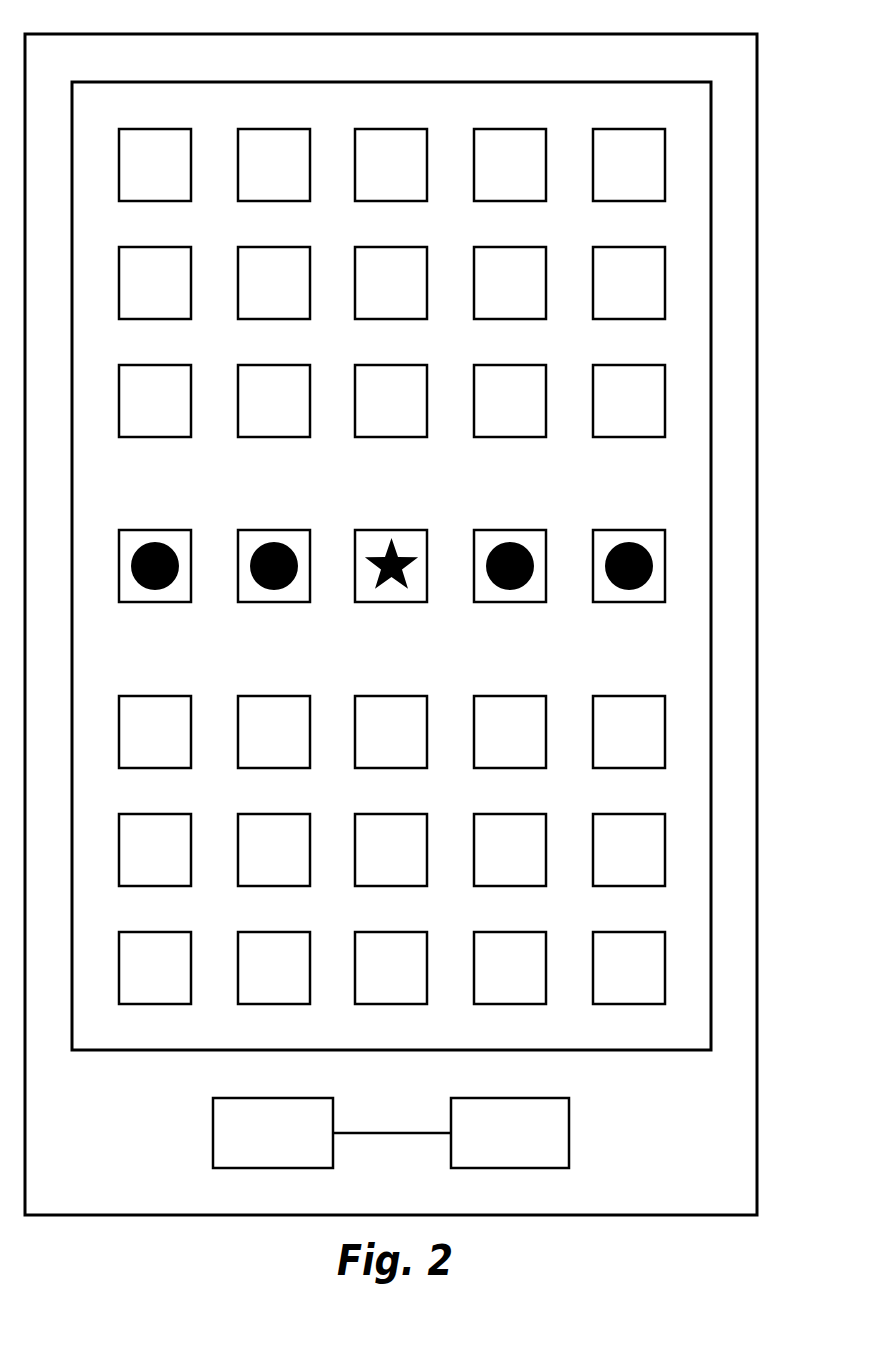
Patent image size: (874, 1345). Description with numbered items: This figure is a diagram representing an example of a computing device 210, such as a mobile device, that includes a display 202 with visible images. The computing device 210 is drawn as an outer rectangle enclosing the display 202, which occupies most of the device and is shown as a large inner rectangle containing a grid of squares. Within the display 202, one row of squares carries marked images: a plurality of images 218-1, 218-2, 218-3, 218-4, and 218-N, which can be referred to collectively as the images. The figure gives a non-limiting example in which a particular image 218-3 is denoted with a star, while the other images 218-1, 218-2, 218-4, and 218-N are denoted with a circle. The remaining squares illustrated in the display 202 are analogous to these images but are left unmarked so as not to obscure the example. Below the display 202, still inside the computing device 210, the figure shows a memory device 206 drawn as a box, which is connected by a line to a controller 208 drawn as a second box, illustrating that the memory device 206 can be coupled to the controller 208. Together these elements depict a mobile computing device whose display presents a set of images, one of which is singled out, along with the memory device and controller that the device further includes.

The computing device 210 is at (156, 42).
The display 202 is at (286, 90).
The image 218-1 is at (154, 538).
The image 218-2 is at (273, 538).
The particular image 218-3 is at (391, 538).
The image 218-4 is at (509, 538).
The image 218-N is at (628, 538).
The memory device 206 is at (273, 1133).
The controller 208 is at (510, 1133).